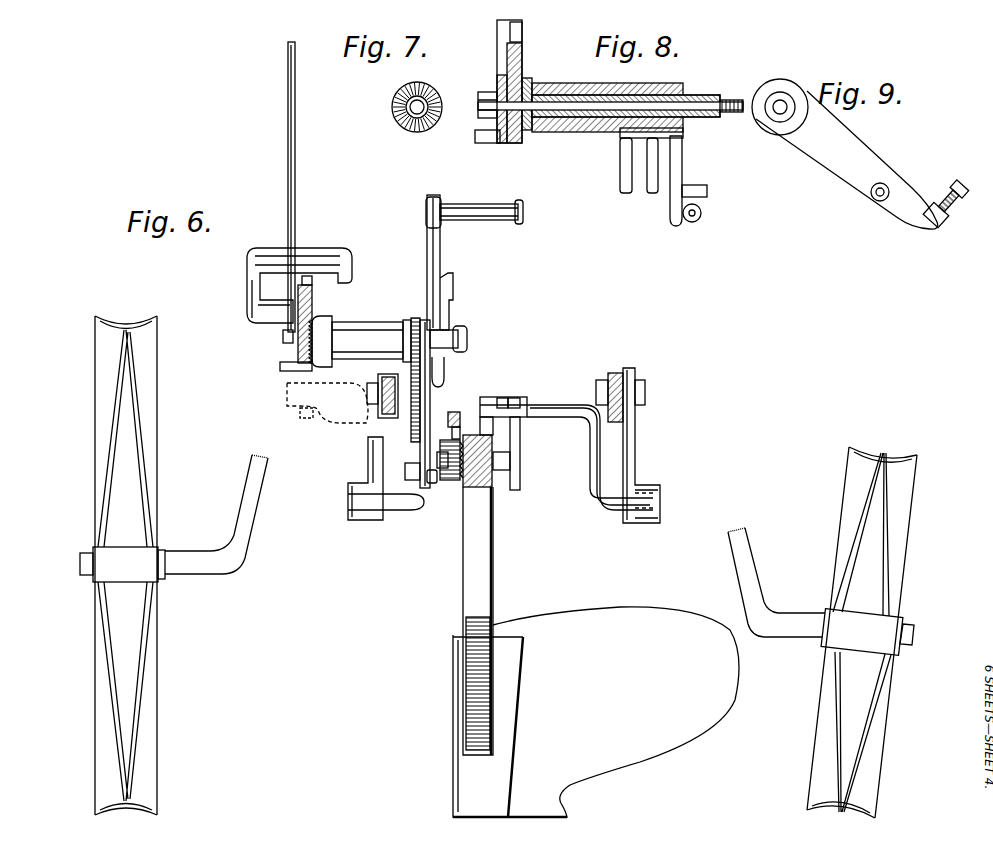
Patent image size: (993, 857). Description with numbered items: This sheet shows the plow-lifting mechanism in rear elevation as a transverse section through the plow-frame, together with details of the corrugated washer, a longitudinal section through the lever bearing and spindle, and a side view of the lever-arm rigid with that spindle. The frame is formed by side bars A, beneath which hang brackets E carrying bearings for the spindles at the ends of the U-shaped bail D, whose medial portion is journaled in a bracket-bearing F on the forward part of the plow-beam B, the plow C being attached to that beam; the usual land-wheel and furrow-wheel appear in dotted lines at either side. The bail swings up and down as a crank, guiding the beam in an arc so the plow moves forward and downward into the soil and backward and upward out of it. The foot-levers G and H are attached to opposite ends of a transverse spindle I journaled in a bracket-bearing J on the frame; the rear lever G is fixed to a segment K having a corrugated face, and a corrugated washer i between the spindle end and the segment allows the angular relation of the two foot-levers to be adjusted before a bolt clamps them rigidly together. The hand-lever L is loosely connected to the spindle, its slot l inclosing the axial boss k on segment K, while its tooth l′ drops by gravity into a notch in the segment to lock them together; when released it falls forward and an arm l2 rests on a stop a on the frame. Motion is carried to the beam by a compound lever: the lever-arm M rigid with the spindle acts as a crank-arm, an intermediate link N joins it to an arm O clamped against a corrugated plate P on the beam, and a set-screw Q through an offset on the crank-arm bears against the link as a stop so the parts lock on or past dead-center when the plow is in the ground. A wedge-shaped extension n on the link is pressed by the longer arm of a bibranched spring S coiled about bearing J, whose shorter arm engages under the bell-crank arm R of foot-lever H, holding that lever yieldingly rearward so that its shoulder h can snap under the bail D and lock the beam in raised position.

In FIG. 6, the hand-lever L is at (288, 178).
In FIG. 8, the hand-lever L is at (497, 40).
In FIG. 6, the tooth l′ is at (310, 278).
In FIG. 8, the tooth l′ is at (523, 32).
In FIG. 6, the arm l2 is at (290, 366).
In FIG. 8, the slot l is at (495, 93).
In FIG. 6, the foot-lever G is at (247, 292).
In FIG. 6, the segment K is at (313, 301).
In FIG. 8, the segment K is at (522, 52).
In FIG. 6, the bracket-bearing J is at (368, 337).
In FIG. 8, the bracket-bearing J is at (607, 125).
In FIG. 6, the lever-arm M is at (416, 442).
In FIG. 8, the lever-arm M is at (696, 165).
In FIG. 9, the lever-arm M is at (778, 152).
In FIG. 6, the spring S is at (432, 346).
In FIG. 6, the foot-lever H is at (427, 240).
In FIG. 6, the offset or shoulder h is at (452, 286).
In FIG. 6, the bell-crank arm R is at (448, 368).
In FIG. 6, the wedge-shaped extension n is at (445, 372).
In FIG. 6, the corrugated plate or washer P is at (462, 431).
In FIG. 6, the arm or bracket O is at (450, 443).
In FIG. 6, the plow-beam B is at (494, 488).
In FIG. 6, the bracket-bearing F is at (522, 398).
In FIG. 6, the bail D is at (417, 511).
In FIG. 6, the brackets E is at (370, 467).
In FIG. 6, the side bars of the frame A is at (382, 415).
In FIG. 6, the stop a is at (326, 417).
In FIG. 6, the intermediate link N is at (437, 488).
In FIG. 6, the plow C is at (454, 752).
In FIG. 7, the corrugated washer i is at (408, 88).
In FIG. 8, the corrugated washer i is at (531, 80).
In FIG. 8, the projection or axial boss k is at (493, 121).
In FIG. 8, the transverse spindle I is at (603, 118).
In FIG. 9, the set-screw Q is at (959, 185).